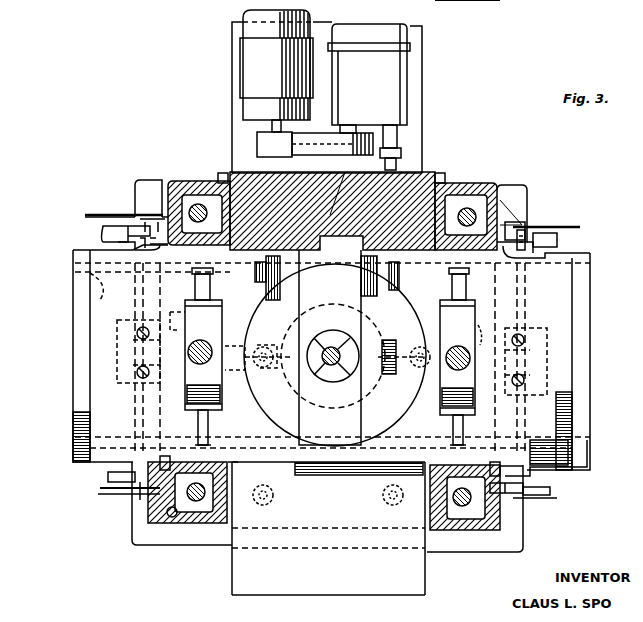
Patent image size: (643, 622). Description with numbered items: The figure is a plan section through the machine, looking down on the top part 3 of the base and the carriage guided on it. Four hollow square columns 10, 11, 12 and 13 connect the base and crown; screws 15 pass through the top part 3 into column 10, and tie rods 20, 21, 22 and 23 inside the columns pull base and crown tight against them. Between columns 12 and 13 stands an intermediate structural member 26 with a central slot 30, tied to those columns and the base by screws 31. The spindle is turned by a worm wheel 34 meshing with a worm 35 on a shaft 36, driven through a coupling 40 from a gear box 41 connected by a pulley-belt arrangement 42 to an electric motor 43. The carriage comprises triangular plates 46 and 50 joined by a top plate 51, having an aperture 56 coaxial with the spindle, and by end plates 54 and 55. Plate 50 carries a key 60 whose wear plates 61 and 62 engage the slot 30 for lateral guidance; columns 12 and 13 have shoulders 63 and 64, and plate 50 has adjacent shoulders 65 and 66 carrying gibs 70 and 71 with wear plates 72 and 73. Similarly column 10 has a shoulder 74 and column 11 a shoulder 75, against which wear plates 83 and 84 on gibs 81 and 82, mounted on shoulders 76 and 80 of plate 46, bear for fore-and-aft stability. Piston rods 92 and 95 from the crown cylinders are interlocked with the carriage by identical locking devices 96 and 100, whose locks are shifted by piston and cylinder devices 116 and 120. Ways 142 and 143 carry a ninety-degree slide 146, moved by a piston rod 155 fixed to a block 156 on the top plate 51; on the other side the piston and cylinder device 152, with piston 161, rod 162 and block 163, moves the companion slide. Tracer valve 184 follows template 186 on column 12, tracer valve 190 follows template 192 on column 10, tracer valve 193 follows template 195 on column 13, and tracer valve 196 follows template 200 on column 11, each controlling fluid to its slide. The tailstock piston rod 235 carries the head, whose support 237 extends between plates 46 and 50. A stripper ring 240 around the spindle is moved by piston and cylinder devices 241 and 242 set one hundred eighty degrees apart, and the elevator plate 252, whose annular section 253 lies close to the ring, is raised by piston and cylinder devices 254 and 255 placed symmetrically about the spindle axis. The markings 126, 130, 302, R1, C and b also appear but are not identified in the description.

The top part 3 is at (513, 524).
The column 10 is at (193, 530).
The column 11 is at (458, 532).
The column 12 is at (196, 181).
The column 13 is at (470, 208).
The screws 15 is at (153, 568).
The tie rod 20 is at (198, 502).
The tie rod 21 is at (463, 506).
The tie rod 22 is at (199, 204).
The tie rod 23 is at (488, 195).
The intermediate structural member 26 is at (272, 172).
The slot 30 is at (349, 186).
The screws 31 is at (223, 173).
The worm wheel 34 is at (350, 409).
The worm 35 is at (375, 411).
The shaft 36 is at (410, 282).
The coupling 40 is at (395, 148).
The gear box 41 is at (408, 80).
The pulley-belt arrangement 42 is at (262, 140).
The electric motor 43 is at (246, 55).
The plate 46 is at (378, 472).
The plate 50 is at (590, 285).
The top plate 51 is at (544, 289).
The end plate 54 is at (75, 328).
The end plate 55 is at (590, 345).
The aperture 56 is at (275, 300).
The key 60 is at (322, 173).
The wear plate 61 is at (290, 268).
The wear plate 62 is at (390, 254).
The shoulder 63 is at (95, 255).
The shoulder 64 is at (588, 266).
The shoulder 65 is at (135, 243).
The shoulder 66 is at (560, 248).
The gib 70 is at (152, 218).
The gib 71 is at (530, 228).
The wear plate 72 is at (160, 218).
The wear plate 73 is at (508, 222).
The shoulder 74 is at (132, 437).
The shoulder 75 is at (510, 462).
The shoulder 76 is at (132, 464).
The shoulder 80 is at (550, 478).
The gib 81 is at (108, 477).
The gib 82 is at (525, 490).
The wear plate 83 is at (166, 467).
The wear plate 84 is at (492, 469).
The rod 92 is at (200, 365).
The rod 95 is at (462, 368).
The locking device 96 is at (185, 306).
The locking device 100 is at (478, 316).
The piston and cylinder device 116 is at (192, 283).
The piston and cylinder device 120 is at (196, 430).
The guide 126 is at (170, 321).
The guide 130 is at (491, 334).
The way 142 is at (105, 432).
The way 143 is at (90, 275).
The slide 146 is at (300, 288).
The piston and cylinder device 152 is at (409, 336).
The piston rod 155 is at (125, 352).
The block 156 is at (78, 320).
The piston 161 is at (252, 340).
The piston rod 162 is at (575, 366).
The block 163 is at (575, 330).
The tracer valve 184 is at (110, 225).
The template 186 is at (90, 214).
The tracer valve 190 is at (102, 488).
The template 192 is at (100, 494).
The tracer valve 193 is at (560, 235).
The template 195 is at (578, 226).
The tracer valve 196 is at (552, 492).
The template 200 is at (556, 499).
The piston rod 235 is at (323, 394).
The support 237 is at (338, 319).
The stripper ring 240 is at (266, 262).
The piston and cylinder device 241 is at (271, 385).
The piston and cylinder device 242 is at (395, 393).
The elevator plate 252 is at (330, 598).
The annular section 253 is at (285, 472).
The piston and cylinder device 254 is at (258, 512).
The piston and cylinder device 255 is at (396, 512).
The pin 302 is at (166, 513).
The radius R1 is at (286, 330).
The casing C is at (566, 305).
The point b is at (328, 462).